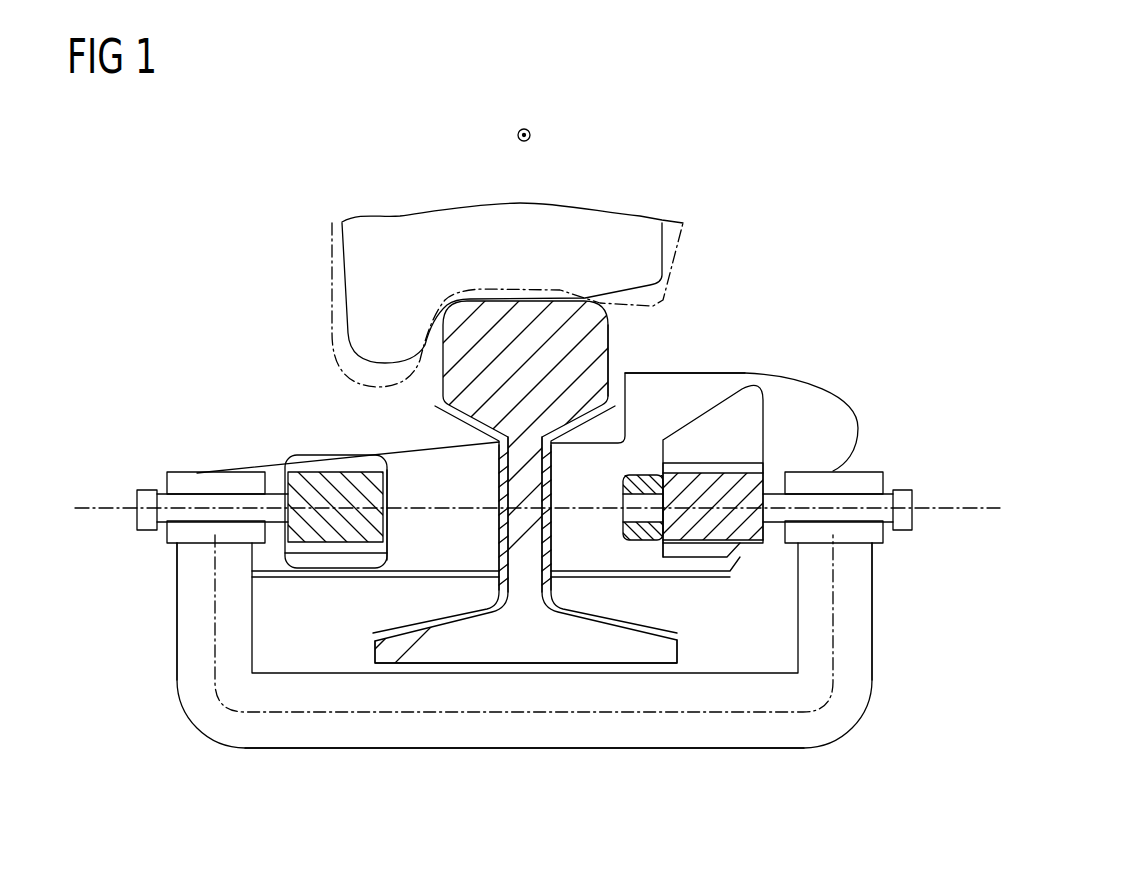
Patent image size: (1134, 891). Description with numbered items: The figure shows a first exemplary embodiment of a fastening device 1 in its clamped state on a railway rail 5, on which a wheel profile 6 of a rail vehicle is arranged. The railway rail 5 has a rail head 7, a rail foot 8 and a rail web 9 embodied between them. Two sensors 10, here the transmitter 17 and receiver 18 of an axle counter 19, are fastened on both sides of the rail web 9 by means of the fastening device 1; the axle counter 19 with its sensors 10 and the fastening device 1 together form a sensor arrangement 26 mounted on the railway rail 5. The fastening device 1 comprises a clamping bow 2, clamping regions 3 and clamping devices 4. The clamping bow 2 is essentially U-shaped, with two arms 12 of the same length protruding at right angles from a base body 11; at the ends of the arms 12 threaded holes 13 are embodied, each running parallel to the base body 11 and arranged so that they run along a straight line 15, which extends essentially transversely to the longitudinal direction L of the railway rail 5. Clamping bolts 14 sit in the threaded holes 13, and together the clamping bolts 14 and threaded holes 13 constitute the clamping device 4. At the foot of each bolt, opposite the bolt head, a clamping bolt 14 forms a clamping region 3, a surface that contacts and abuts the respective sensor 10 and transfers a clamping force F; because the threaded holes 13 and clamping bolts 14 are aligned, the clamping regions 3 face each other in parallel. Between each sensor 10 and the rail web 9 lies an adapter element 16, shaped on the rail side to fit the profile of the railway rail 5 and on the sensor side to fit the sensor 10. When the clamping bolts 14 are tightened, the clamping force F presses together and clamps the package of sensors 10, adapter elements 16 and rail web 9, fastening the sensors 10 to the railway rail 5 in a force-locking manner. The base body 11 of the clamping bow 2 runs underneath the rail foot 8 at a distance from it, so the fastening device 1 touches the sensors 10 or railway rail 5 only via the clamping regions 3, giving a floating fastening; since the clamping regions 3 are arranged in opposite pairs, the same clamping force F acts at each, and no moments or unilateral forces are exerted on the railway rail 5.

The fastening device 1 is at (175, 792).
The clamping bow 2 is at (485, 748).
The clamping region 3 is at (527, 463).
The clamping device 4 is at (532, 500).
The railway rail 5 is at (595, 357).
The wheel profile 6 is at (468, 226).
The rail head 7 is at (535, 328).
The rail foot 8 is at (622, 656).
The rail web 9 is at (530, 543).
The sensor 10 is at (403, 557).
The base body 11 is at (723, 732).
The arm 12 is at (185, 626).
The threaded hole 13 is at (168, 490).
The clamping bolt 14 is at (148, 490).
The straight line 15 is at (452, 520).
The adapter element 16 is at (495, 490).
The transmitter 17 is at (590, 440).
The receiver 18 is at (431, 456).
The axle counter 19 is at (788, 288).
The sensor arrangement 26 is at (255, 336).
The longitudinal direction L is at (524, 128).
The clamping force F is at (110, 508).